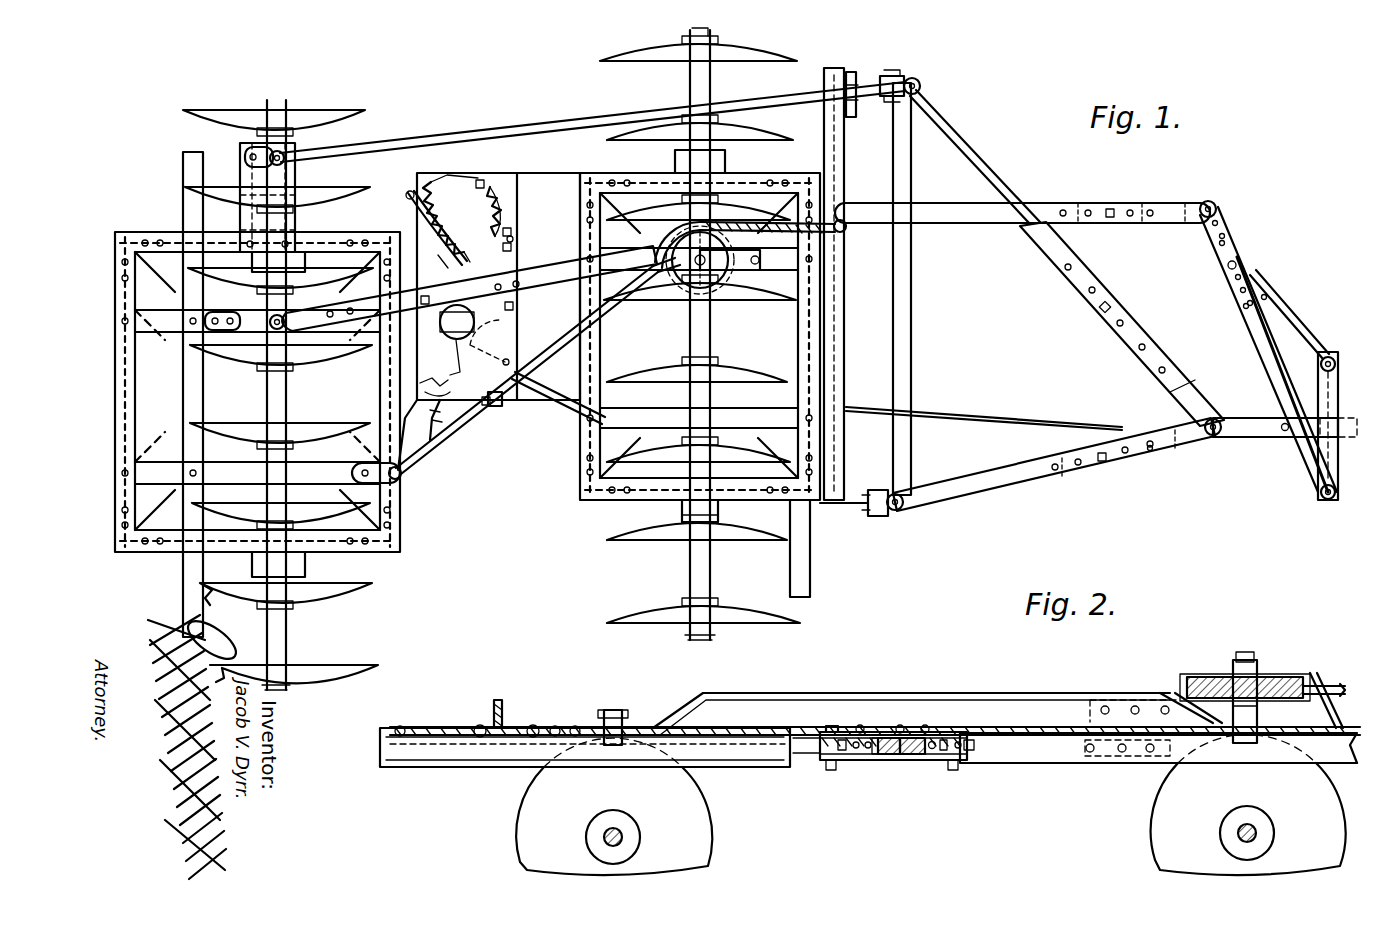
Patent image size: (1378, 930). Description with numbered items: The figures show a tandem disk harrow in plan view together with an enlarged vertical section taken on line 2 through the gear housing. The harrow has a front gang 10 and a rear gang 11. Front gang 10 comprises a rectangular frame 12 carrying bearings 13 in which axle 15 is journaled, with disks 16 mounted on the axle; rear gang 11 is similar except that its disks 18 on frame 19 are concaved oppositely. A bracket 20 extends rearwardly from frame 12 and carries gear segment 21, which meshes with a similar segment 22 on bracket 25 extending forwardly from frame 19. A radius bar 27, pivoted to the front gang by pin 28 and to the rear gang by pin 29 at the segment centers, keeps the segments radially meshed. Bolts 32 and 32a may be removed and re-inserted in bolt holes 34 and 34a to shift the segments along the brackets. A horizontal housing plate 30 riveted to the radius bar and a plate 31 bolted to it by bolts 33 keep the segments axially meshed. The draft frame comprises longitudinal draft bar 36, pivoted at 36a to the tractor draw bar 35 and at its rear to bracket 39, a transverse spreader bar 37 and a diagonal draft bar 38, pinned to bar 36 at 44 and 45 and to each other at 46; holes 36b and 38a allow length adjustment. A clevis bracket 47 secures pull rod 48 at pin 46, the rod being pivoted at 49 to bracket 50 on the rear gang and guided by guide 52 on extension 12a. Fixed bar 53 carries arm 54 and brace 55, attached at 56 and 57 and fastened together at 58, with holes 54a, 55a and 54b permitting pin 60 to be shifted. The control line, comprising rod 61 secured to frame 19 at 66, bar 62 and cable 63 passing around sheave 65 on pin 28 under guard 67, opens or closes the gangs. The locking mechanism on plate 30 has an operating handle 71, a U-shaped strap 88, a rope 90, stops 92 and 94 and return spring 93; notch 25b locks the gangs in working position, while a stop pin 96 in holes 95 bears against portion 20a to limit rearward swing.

In FIG. 1, the section line 2 is at (95, 310).
In FIG. 1, the front gang 10 is at (603, 518).
In FIG. 1, the rear gang 11 is at (396, 572).
In FIG. 2, the rear gang 11 is at (532, 714).
In FIG. 1, the rectangular frame 12 is at (574, 496).
In FIG. 1, the extension 12a is at (842, 152).
In FIG. 1, the bearings 13 is at (305, 262).
In FIG. 1, the axle 15 is at (285, 630).
In FIG. 2, the axle 15 is at (620, 832).
In FIG. 1, the disks 16 is at (760, 55).
In FIG. 2, the disks 16 is at (1248, 805).
In FIG. 1, the disks 18 is at (325, 112).
In FIG. 2, the disks 18 is at (702, 851).
In FIG. 1, the frame 19 is at (410, 536).
In FIG. 2, the frame 19 is at (431, 722).
In FIG. 1, the bracket 20 is at (562, 410).
In FIG. 2, the bracket 20 is at (1025, 757).
In FIG. 1, the rearwardly extending portion 20a is at (536, 175).
In FIG. 1, the gear segment 21 is at (495, 185).
In FIG. 2, the gear segment 21 is at (908, 762).
In FIG. 1, the gear segment 22 is at (445, 195).
In FIG. 2, the gear segment 22 is at (888, 762).
In FIG. 1, the bracket 25 is at (430, 410).
In FIG. 2, the bracket 25 is at (805, 762).
In FIG. 1, the notch 25b is at (440, 258).
In FIG. 1, the radius bar 27 is at (469, 288).
In FIG. 2, the radius bar 27 is at (916, 714).
In FIG. 1, the pin 28 is at (692, 270).
In FIG. 2, the pin 28 is at (1247, 658).
In FIG. 1, the pin 29 is at (272, 335).
In FIG. 2, the pin 29 is at (616, 708).
In FIG. 1, the housing plate 30 is at (495, 405).
In FIG. 2, the housing plate 30 is at (860, 727).
In FIG. 1, the housing plate 31 is at (450, 172).
In FIG. 2, the housing plate 31 is at (876, 762).
In FIG. 1, the bolt 32 is at (405, 198).
In FIG. 2, the bolt 32 is at (830, 734).
In FIG. 1, the bolt 32a is at (522, 193).
In FIG. 2, the bolt 32a is at (972, 760).
In FIG. 1, the bolts 33 is at (480, 180).
In FIG. 2, the bolt holes 34 is at (852, 762).
In FIG. 2, the bolt holes 34a is at (942, 762).
In FIG. 1, the draw bar 35 is at (1313, 415).
In FIG. 1, the longitudinal draft bar 36 is at (1040, 484).
In FIG. 1, the pivot 36a is at (1287, 434).
In FIG. 1, the holes 36b is at (1148, 452).
In FIG. 1, the transverse spreader bar 37 is at (913, 313).
In FIG. 1, the diagonal draft bar 38 is at (1092, 306).
In FIG. 1, the holes 38a is at (1130, 348).
In FIG. 1, the bracket 39 is at (858, 512).
In FIG. 1, the pin 44 is at (894, 512).
In FIG. 1, the pin 45 is at (1211, 440).
In FIG. 1, the pin 46 is at (920, 80).
In FIG. 1, the clevis bracket 47 is at (898, 72).
In FIG. 1, the pull rod 48 is at (580, 118).
In FIG. 1, the pivot 49 is at (288, 160).
In FIG. 1, the bracket 50 is at (240, 175).
In FIG. 1, the guide 52 is at (850, 72).
In FIG. 1, the bar 53 is at (1322, 385).
In FIG. 1, the arm 54 is at (1275, 364).
In FIG. 1, the holes 54a is at (1242, 312).
In FIG. 1, the holes 54b is at (1226, 240).
In FIG. 1, the brace 55 is at (1282, 312).
In FIG. 1, the holes 55a is at (1268, 292).
In FIG. 1, the attachment point 56 is at (1318, 492).
In FIG. 1, the attachment point 57 is at (1327, 348).
In FIG. 1, the pin 58 is at (1240, 266).
In FIG. 1, the pin 60 is at (1216, 205).
In FIG. 1, the rod 61 is at (440, 440).
In FIG. 1, the bar 62 is at (978, 226).
In FIG. 1, the cable 63 is at (652, 298).
In FIG. 2, the cable 63 is at (1320, 702).
In FIG. 1, the sheave 65 is at (712, 285).
In FIG. 2, the sheave 65 is at (1275, 677).
In FIG. 1, the attachment point 66 is at (402, 478).
In FIG. 1, the guard 67 is at (656, 238).
In FIG. 2, the guard 67 is at (1178, 690).
In FIG. 1, the operating handle 71 is at (425, 392).
In FIG. 1, the U-shaped strap 88 is at (449, 327).
In FIG. 1, the rope 90 is at (984, 424).
In FIG. 1, the stop 92 is at (510, 362).
In FIG. 1, the spring 93 is at (420, 383).
In FIG. 1, the stop 94 is at (456, 365).
In FIG. 1, the holes 95 is at (510, 230).
In FIG. 1, the stop pin 96 is at (514, 238).
In FIG. 2, the stop pin 96 is at (972, 760).